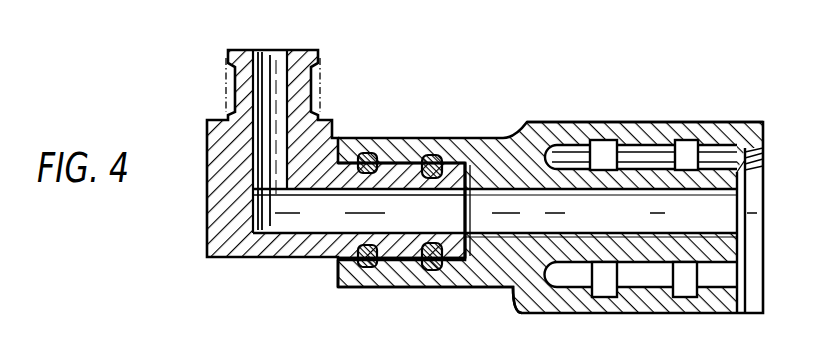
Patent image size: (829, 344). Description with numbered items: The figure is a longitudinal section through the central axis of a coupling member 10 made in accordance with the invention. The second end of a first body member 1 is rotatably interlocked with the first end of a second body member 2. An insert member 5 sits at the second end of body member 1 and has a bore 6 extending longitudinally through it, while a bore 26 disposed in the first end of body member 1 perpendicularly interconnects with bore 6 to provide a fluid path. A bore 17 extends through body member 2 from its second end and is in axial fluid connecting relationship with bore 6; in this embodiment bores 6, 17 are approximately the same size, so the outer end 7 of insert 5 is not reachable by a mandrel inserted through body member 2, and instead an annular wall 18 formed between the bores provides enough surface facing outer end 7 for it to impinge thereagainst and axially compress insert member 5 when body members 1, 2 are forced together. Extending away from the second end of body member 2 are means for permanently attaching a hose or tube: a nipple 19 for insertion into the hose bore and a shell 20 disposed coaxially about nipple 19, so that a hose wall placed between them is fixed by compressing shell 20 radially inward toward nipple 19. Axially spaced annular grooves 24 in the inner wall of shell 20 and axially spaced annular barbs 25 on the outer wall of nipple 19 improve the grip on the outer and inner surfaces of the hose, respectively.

The body member 1 is at (278, 282).
The body member 2 is at (378, 289).
The insert member 5 is at (394, 176).
The bore 6 is at (316, 216).
The outer end 7 is at (484, 242).
The coupling member 10 is at (532, 106).
The bore 17 is at (530, 229).
The annular wall 18 is at (484, 172).
The nipple 19 is at (752, 172).
The shell 20 is at (740, 122).
The annular grooves 24 is at (604, 142).
The annular barbs 25 is at (605, 178).
The bore 26 is at (278, 62).